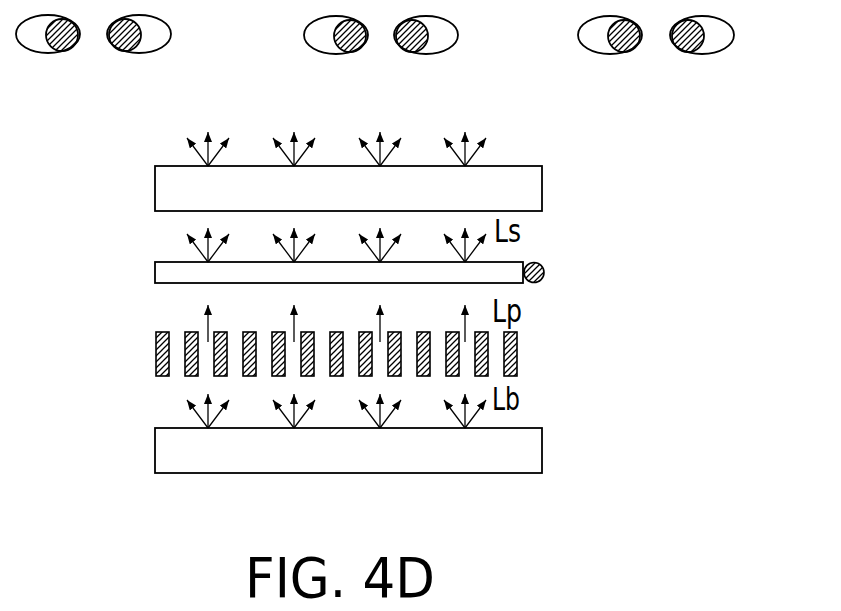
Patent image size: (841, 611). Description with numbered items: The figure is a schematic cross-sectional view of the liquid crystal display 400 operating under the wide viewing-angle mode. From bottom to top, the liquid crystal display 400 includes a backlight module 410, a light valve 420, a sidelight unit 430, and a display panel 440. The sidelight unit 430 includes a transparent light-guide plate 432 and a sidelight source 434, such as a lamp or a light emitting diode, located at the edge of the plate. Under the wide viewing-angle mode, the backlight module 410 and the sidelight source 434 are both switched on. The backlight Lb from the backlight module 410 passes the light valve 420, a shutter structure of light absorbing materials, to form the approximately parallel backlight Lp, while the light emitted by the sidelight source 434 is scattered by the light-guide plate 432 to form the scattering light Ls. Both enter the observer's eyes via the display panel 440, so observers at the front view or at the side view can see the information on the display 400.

The liquid crystal display 400 is at (323, 513).
The backlight module 410 is at (155, 449).
The light valve 420 is at (522, 353).
The sidelight unit 430 is at (375, 259).
The light-guide plate 432 is at (155, 271).
The sidelight source 434 is at (532, 263).
The display panel 440 is at (155, 187).